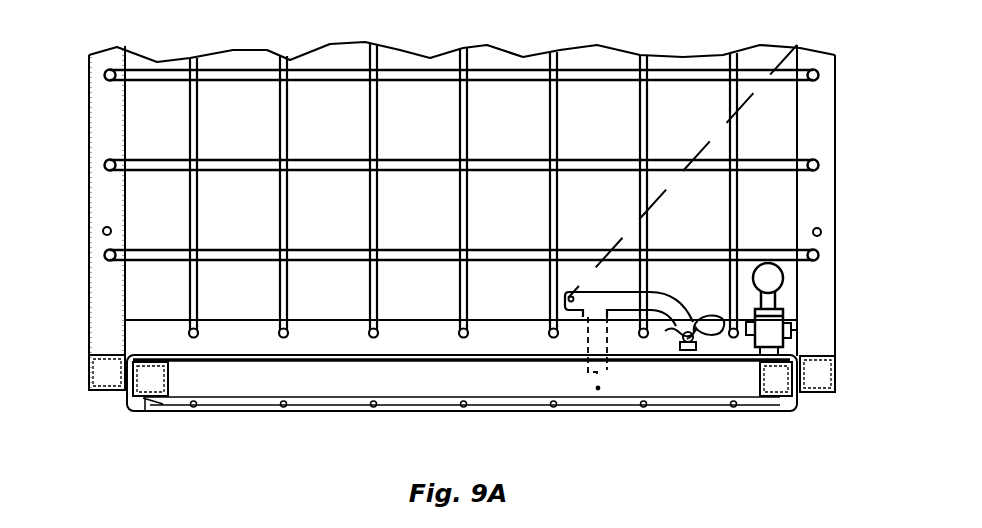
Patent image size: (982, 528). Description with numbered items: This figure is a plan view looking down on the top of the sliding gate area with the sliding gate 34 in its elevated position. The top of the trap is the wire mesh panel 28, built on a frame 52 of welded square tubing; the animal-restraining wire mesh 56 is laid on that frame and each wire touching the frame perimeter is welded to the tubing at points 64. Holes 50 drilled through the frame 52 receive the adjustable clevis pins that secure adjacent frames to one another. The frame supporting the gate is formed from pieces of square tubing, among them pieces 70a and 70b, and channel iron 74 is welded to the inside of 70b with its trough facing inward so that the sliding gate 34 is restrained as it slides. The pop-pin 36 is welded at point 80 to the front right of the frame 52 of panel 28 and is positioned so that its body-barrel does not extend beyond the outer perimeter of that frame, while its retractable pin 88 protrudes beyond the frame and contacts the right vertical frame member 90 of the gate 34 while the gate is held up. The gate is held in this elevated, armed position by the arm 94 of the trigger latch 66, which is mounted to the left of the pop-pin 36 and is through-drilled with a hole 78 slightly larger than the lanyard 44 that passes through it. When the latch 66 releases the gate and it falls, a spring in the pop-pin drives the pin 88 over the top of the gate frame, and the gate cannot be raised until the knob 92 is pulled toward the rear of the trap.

The wire mesh panel 28 is at (89, 112).
The wire mesh 56 is at (352, 68).
The welding points 64 is at (108, 74).
The holes 50 is at (103, 229).
The frame 52 is at (105, 306).
The lanyard 44 is at (672, 186).
The trigger latch 66 is at (618, 290).
The hole 78 is at (566, 298).
The arm 94 is at (598, 384).
The knob 92 is at (783, 276).
The pop-pin 36 is at (790, 306).
The welding point 80 is at (790, 332).
The right vertical frame member 90 is at (768, 362).
The retractable pin 88 is at (790, 392).
The sliding gate 34 is at (656, 392).
The square tubing piece 70a is at (89, 372).
The square tubing piece 70b is at (838, 372).
The channel iron 74 is at (127, 405).